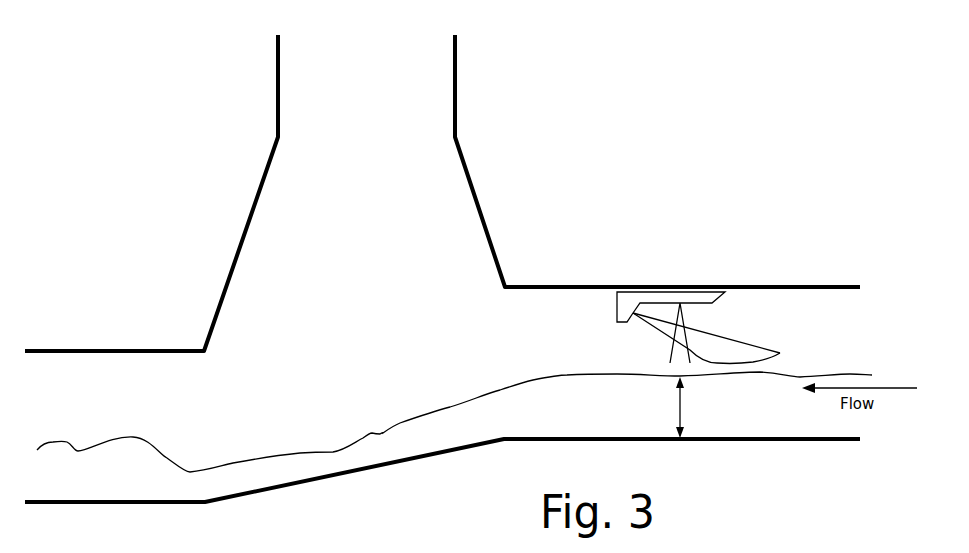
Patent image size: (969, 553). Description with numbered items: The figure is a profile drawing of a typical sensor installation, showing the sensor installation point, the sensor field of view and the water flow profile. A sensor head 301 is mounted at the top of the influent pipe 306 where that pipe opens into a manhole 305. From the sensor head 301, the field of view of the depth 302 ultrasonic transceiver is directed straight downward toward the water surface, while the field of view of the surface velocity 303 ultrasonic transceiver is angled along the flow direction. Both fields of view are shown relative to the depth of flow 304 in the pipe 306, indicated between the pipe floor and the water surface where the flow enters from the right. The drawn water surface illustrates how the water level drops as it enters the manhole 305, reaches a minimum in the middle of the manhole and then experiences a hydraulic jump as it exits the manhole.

The sensor head 301 is at (630, 307).
The depth ultrasonic transceiver 302 is at (680, 352).
The surface velocity ultrasonic transceiver 303 is at (735, 352).
The depth of flow 304 is at (680, 402).
The manhole 305 is at (376, 389).
The influent pipe 306 is at (758, 287).